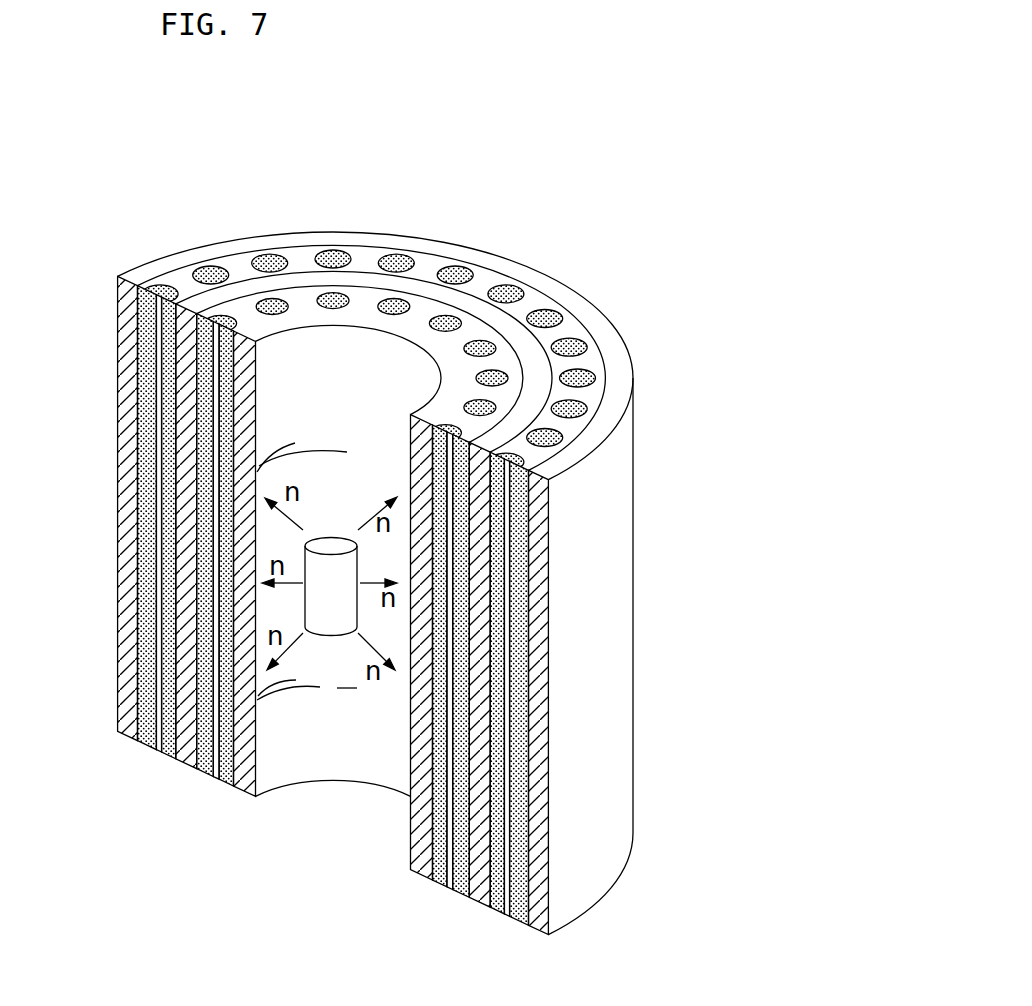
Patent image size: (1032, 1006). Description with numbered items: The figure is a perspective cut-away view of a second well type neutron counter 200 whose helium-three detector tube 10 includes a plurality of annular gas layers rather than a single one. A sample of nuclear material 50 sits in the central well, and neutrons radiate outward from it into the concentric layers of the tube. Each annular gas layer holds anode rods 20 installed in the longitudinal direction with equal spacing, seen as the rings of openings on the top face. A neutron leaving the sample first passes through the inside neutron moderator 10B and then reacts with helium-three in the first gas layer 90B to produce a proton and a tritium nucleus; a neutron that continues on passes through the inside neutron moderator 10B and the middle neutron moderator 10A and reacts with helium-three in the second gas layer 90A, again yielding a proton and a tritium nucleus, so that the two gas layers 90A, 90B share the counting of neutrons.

The second well type neutron counter 200 is at (604, 158).
The He-3 detector tube 10 is at (780, 745).
The middle neutron moderator 10A is at (482, 732).
The inside neutron moderator 10B is at (407, 787).
The anode rod 20 is at (450, 643).
The sample of nuclear material 50 is at (317, 602).
The second gas layer 90A is at (147, 518).
The first gas layer 90B is at (202, 567).